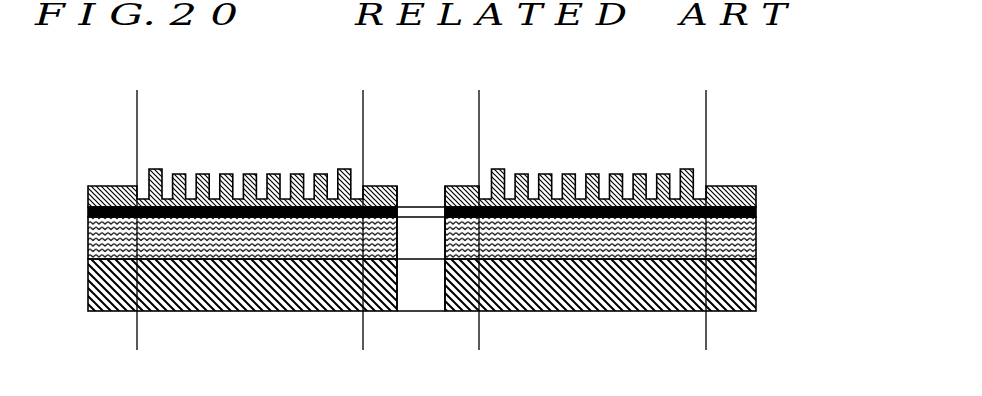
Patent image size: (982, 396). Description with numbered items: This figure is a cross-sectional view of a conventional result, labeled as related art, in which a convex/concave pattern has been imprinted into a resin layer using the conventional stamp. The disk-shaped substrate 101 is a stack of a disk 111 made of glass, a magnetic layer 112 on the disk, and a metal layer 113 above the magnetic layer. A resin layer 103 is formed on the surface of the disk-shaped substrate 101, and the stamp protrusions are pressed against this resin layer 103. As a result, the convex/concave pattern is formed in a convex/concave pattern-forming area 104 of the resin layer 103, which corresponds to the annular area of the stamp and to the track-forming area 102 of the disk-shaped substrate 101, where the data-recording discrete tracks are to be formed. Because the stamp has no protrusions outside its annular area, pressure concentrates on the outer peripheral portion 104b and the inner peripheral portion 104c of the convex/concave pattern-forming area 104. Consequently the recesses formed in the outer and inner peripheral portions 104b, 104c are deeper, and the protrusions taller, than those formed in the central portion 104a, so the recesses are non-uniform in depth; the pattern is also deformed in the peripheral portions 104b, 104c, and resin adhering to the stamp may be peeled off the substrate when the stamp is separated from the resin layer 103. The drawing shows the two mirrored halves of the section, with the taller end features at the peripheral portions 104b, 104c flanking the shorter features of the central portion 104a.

The disk-shaped substrate 101 is at (772, 268).
The track-forming area 102 is at (706, 348).
The resin layer 103 is at (757, 193).
The convex/concave pattern-forming area 104 is at (706, 96).
The central portion 104a is at (250, 171).
The outer peripheral portion 104b is at (156, 166).
The inner peripheral portion 104c is at (344, 166).
The disk 111 is at (757, 303).
The magnetic layer 112 is at (757, 240).
The metal layer 113 is at (757, 211).